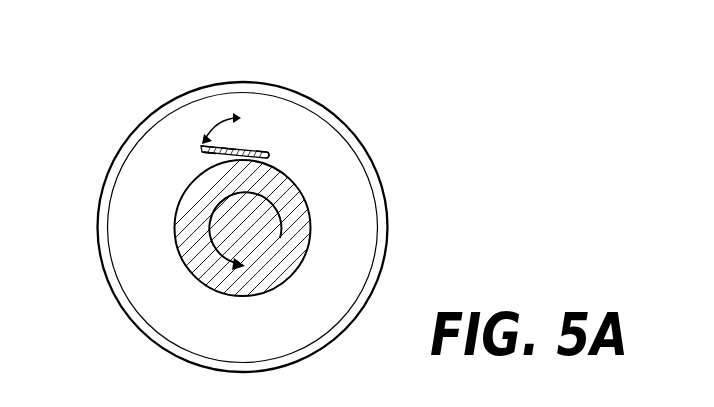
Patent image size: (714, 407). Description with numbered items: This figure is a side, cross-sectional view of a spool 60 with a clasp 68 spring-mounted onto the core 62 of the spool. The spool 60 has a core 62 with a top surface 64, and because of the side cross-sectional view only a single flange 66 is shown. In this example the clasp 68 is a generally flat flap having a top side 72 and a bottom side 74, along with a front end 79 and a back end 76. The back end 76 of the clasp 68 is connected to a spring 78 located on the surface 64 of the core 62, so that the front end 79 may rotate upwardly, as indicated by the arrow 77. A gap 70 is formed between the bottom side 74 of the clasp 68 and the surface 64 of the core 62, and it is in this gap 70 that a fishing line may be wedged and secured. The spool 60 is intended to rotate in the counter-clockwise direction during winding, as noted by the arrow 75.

The spool 60 is at (364, 109).
The core 62 is at (292, 207).
The top surface of the core 64 is at (300, 187).
The flange 66 is at (330, 255).
The clasp 68 is at (254, 150).
The gap 70 is at (207, 156).
The top side 72 is at (228, 148).
The bottom side 74 is at (210, 160).
The arrow 75 is at (216, 249).
The back end 76 is at (263, 153).
The arrow 77 is at (213, 136).
The spring 78 is at (268, 156).
The front end 79 is at (203, 147).